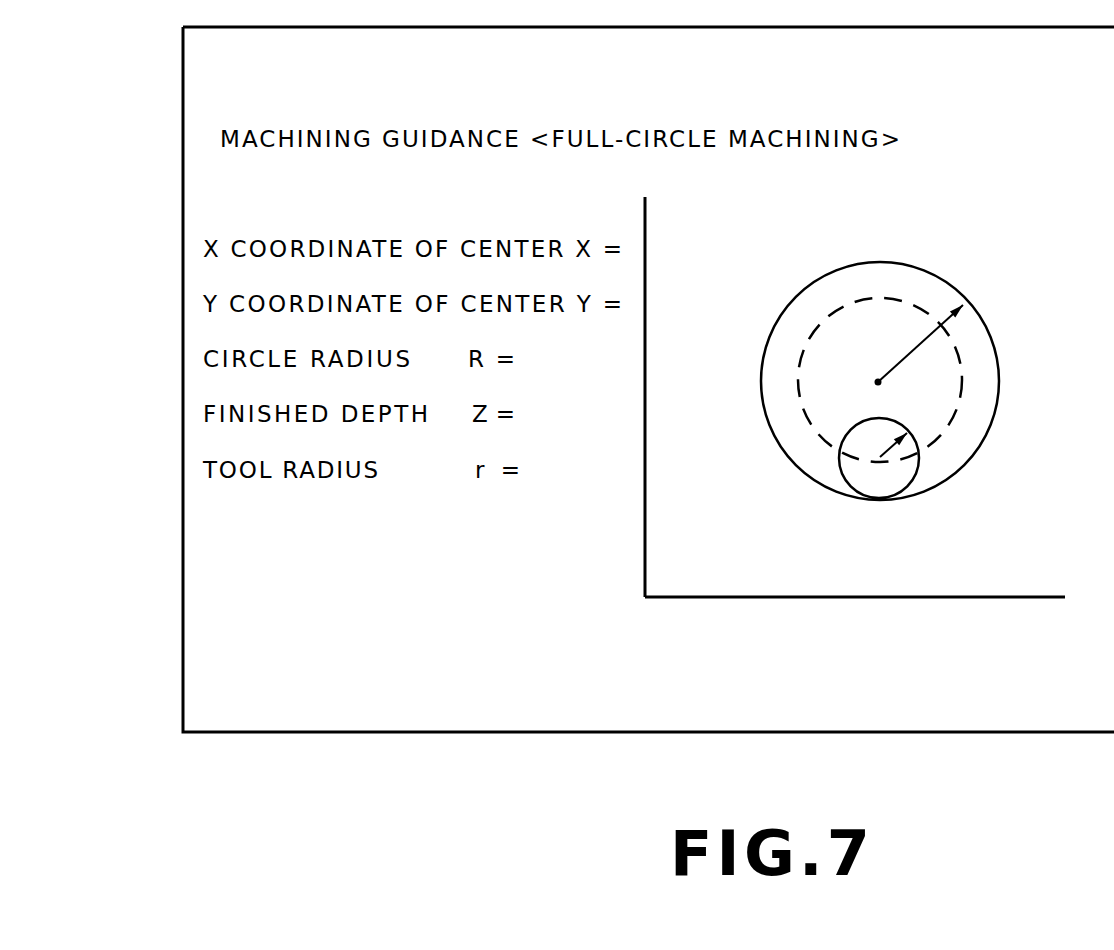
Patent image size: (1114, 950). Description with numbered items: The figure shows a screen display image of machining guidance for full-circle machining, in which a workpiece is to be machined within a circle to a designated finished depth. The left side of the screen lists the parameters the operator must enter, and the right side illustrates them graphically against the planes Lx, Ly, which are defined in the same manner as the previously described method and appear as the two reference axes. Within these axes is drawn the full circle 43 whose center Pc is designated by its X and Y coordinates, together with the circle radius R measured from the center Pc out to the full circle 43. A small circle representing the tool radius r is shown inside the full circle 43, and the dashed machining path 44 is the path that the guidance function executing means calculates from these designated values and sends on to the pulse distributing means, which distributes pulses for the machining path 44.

The full circle 43 is at (930, 275).
The machining path 44 is at (848, 302).
The center of full circle Pc is at (878, 382).
The circle radius R is at (920, 343).
The tool radius r is at (880, 457).
The plane Lx is at (1007, 600).
The plane Ly is at (647, 212).